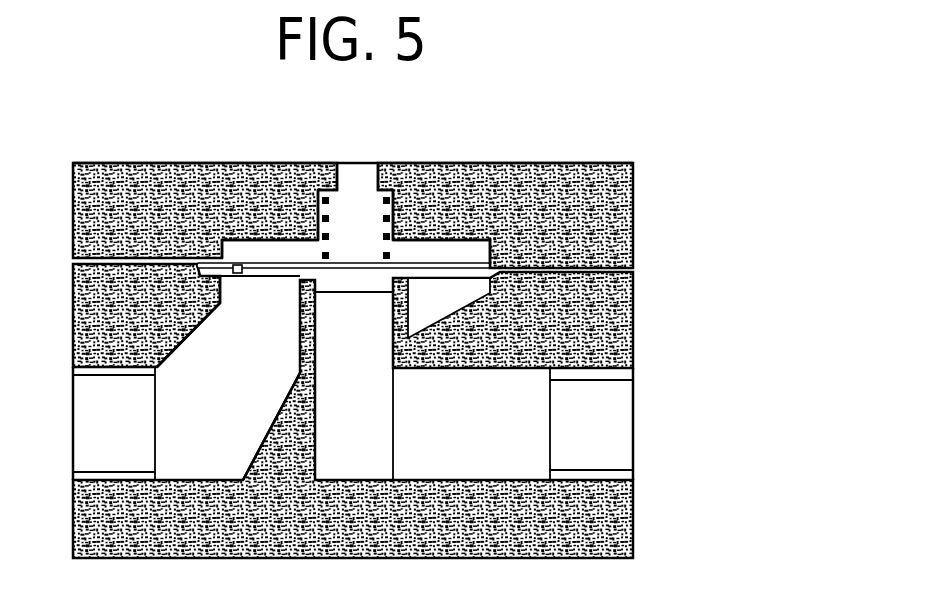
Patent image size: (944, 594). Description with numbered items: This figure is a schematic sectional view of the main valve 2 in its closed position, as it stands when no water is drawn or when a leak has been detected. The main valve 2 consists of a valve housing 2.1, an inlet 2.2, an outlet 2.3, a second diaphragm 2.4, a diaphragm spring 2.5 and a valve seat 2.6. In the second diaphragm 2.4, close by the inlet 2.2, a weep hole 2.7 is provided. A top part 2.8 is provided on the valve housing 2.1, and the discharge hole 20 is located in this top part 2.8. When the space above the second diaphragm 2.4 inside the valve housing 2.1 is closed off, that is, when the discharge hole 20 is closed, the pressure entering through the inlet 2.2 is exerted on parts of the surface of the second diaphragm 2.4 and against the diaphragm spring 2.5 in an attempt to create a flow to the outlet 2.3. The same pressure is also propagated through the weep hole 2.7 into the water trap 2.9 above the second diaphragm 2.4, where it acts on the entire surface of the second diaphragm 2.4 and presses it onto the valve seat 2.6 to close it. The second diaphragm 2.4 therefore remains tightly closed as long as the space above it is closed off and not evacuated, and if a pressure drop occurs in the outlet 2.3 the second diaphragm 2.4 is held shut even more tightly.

The main valve 2 is at (730, 281).
The valve housing 2.1 is at (635, 352).
The inlet 2.2 is at (246, 385).
The outlet 2.3 is at (362, 375).
The second diaphragm 2.4 is at (258, 241).
The diaphragm spring 2.5 is at (304, 202).
The valve seat 2.6 is at (420, 305).
The weep hole 2.7 is at (225, 244).
The top part 2.8 is at (635, 219).
The water trap 2.9 is at (490, 253).
The discharge hole 20 is at (362, 202).